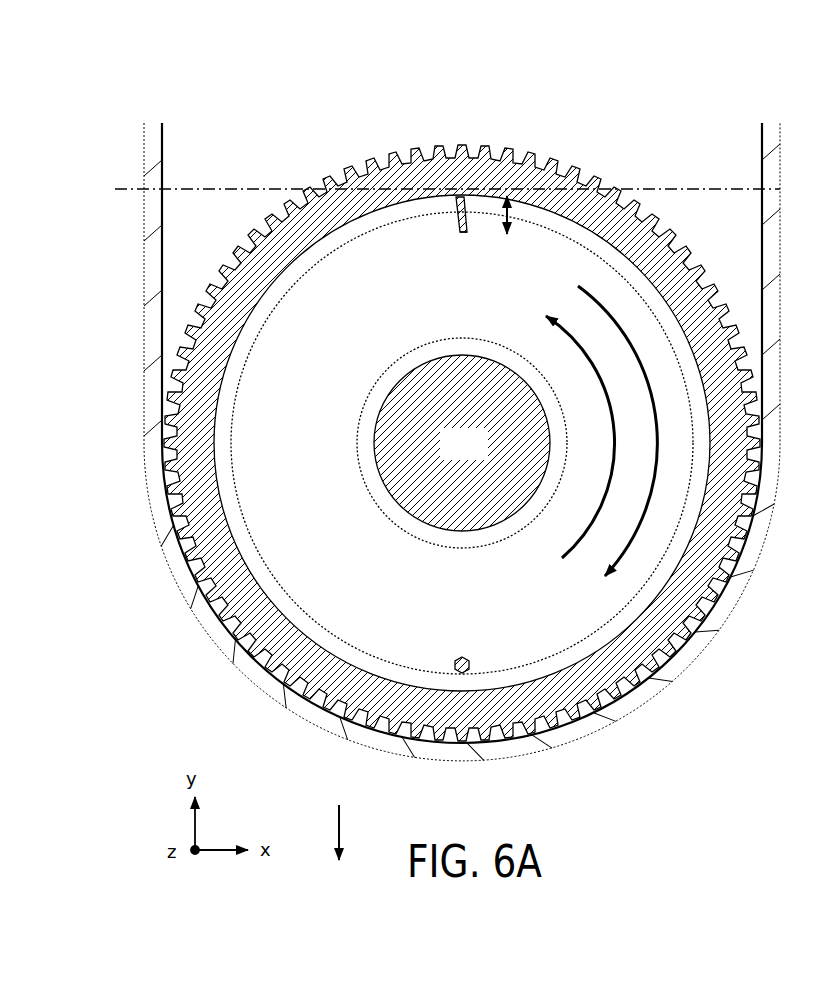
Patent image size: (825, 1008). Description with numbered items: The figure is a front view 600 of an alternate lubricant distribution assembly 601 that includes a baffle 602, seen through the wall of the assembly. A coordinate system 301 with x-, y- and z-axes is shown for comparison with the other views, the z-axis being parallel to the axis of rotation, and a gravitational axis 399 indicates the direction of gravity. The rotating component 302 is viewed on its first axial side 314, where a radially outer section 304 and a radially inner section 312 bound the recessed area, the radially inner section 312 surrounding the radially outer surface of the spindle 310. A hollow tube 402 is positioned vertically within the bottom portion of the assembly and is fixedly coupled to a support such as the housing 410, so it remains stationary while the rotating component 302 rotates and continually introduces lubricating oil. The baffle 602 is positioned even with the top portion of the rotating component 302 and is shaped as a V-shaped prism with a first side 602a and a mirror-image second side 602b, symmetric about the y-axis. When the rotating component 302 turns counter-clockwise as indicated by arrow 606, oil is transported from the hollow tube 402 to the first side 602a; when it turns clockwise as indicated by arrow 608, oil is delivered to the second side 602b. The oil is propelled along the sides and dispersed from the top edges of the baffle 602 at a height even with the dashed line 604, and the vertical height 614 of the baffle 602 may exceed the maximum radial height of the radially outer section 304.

The front view 600 is at (206, 97).
The coordinate system 301 is at (150, 800).
The rotating component 302 is at (216, 246).
The radially outer section 304 is at (260, 347).
The spindle 310 is at (488, 459).
The radially inner section 312 is at (360, 426).
The first axial side 314 is at (657, 164).
The gravitational axis 399 is at (338, 828).
The hollow tube 402 is at (442, 666).
The housing 410 is at (207, 632).
The lubricant distribution assembly 601 is at (388, 132).
The baffle 602 is at (447, 216).
The first side 602a is at (460, 216).
The second side 602b is at (463, 226).
The dashed line 604 is at (262, 189).
The arrow 606 is at (562, 560).
The arrow 608 is at (578, 286).
The vertical height 614 is at (512, 232).